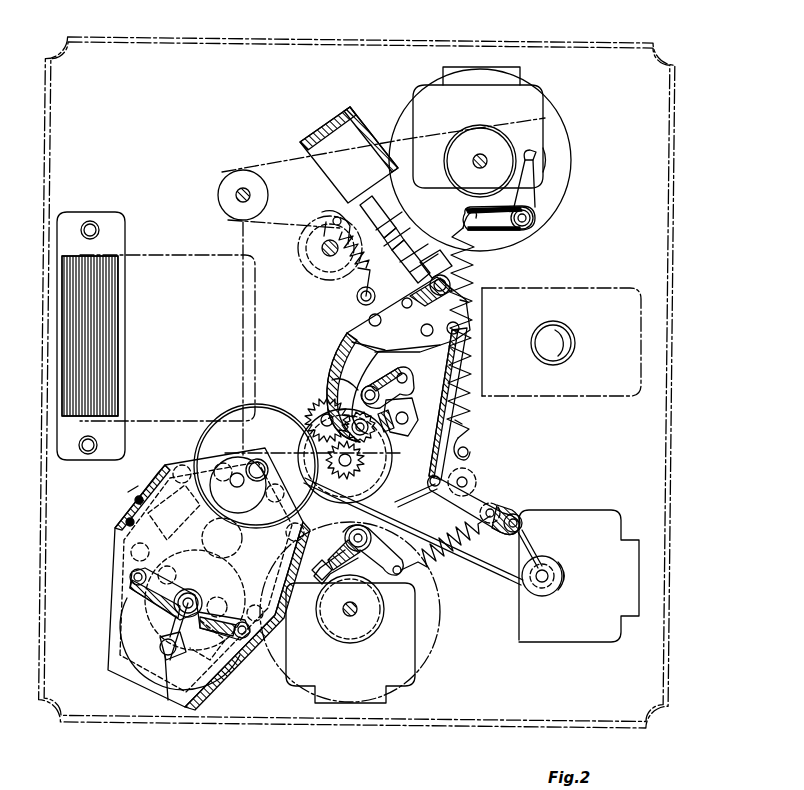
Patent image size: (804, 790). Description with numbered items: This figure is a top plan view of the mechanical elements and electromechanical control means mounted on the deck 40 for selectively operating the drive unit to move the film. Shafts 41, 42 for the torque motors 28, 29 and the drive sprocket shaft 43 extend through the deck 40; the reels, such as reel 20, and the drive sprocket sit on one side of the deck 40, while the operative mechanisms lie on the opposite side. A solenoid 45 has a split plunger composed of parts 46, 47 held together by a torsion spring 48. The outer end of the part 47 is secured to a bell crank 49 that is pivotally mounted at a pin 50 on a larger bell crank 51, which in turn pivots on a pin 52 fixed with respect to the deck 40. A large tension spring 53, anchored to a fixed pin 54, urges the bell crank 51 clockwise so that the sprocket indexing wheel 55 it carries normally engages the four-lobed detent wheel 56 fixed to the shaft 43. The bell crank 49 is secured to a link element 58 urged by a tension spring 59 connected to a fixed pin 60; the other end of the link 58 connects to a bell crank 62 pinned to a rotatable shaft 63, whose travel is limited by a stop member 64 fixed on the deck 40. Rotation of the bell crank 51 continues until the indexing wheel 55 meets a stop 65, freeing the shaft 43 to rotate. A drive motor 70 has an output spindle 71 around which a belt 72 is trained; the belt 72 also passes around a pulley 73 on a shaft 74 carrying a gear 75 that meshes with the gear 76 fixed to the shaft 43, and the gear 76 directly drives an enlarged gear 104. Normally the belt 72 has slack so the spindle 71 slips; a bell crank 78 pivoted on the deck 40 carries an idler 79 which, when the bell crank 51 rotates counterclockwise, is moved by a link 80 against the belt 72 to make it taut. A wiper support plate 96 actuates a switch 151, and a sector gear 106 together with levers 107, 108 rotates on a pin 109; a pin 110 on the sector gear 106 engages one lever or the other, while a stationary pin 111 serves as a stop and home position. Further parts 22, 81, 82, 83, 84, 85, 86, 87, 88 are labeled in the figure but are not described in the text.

The deck 40 is at (238, 52).
The tape reel 22 is at (270, 160).
The torque motor 28 is at (550, 108).
The shaft 41 is at (484, 158).
The solenoid 45 is at (333, 120).
The plunger part 46 is at (386, 200).
The torsion spring 48 is at (438, 248).
The plunger part 47 is at (447, 255).
The spring end 87 is at (470, 258).
The bell crank 49 is at (432, 284).
The pin 50 is at (408, 298).
The link element 58 is at (356, 296).
The tension spring 59 is at (300, 238).
The fixed pin 60 is at (330, 212).
The large bell crank 51 is at (340, 358).
The pin 52 is at (348, 336).
The rotatable shaft 63 is at (348, 382).
The bell crank 62 is at (388, 380).
The stop member 64 is at (418, 404).
The stop 65 is at (392, 434).
The gear 76 is at (312, 402).
The drive sprocket shaft 43 is at (350, 418).
The shaft 74 is at (345, 468).
The sprocket indexing wheel 55 is at (390, 466).
The gear 75 is at (372, 492).
The four-lobed detent wheel 56 is at (268, 406).
The enlarged gear 104 is at (232, 432).
The large tension spring 53 is at (466, 426).
The link 80 is at (468, 448).
The fixed pin 54 is at (475, 452).
The arm 81 is at (515, 158).
The arm 85 is at (536, 178).
The lever 83 is at (535, 215).
The support plate 96 is at (190, 505).
The switch 151 is at (128, 498).
The lever 107 is at (152, 614).
The pin 109 is at (213, 586).
The lever 108 is at (215, 675).
The pin 110 is at (162, 658).
The sector gear 106 is at (232, 664).
The stationary pin 111 is at (160, 708).
The bell crank 78 is at (500, 490).
The idler 79 is at (525, 520).
The pulley 73 is at (418, 496).
The belt 72 is at (480, 572).
The drive motor 70 is at (604, 512).
The output spindle 71 is at (564, 568).
The brake lever 84 is at (378, 550).
The brake pad 86 is at (316, 598).
The spring 88 is at (450, 554).
The torque motor 29 is at (359, 612).
The reel rim 82 is at (364, 640).
The shaft 42 is at (352, 612).
The reel 20 is at (292, 789).